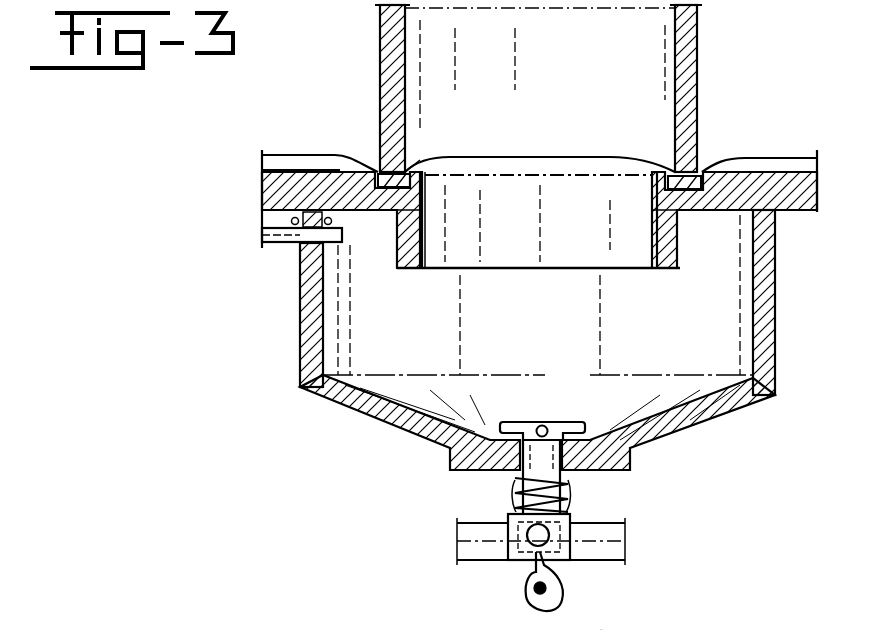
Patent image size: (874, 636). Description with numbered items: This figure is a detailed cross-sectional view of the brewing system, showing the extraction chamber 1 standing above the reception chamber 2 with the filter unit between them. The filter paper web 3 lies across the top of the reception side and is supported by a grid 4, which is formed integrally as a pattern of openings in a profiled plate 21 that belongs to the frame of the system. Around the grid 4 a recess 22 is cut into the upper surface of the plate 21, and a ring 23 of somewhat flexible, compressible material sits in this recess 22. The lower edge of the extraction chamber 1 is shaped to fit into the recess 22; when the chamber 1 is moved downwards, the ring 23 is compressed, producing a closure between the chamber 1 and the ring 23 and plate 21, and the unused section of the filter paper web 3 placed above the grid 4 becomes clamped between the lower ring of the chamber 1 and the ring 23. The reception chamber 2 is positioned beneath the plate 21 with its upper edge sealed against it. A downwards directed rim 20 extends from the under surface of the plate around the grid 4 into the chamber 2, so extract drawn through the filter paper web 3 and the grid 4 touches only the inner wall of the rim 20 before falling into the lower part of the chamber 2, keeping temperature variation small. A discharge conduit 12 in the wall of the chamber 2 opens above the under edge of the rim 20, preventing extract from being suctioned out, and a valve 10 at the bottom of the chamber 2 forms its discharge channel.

The extraction chamber 1 is at (697, 80).
The reception chamber 2 is at (765, 303).
The filter paper web 3 is at (776, 158).
The grid 4 is at (518, 187).
The valve 10 is at (540, 418).
The discharge conduit 12 is at (275, 245).
The rim 20 is at (667, 247).
The profiled plate 21 is at (800, 197).
The recess 22 is at (411, 156).
The ring 23 is at (378, 170).